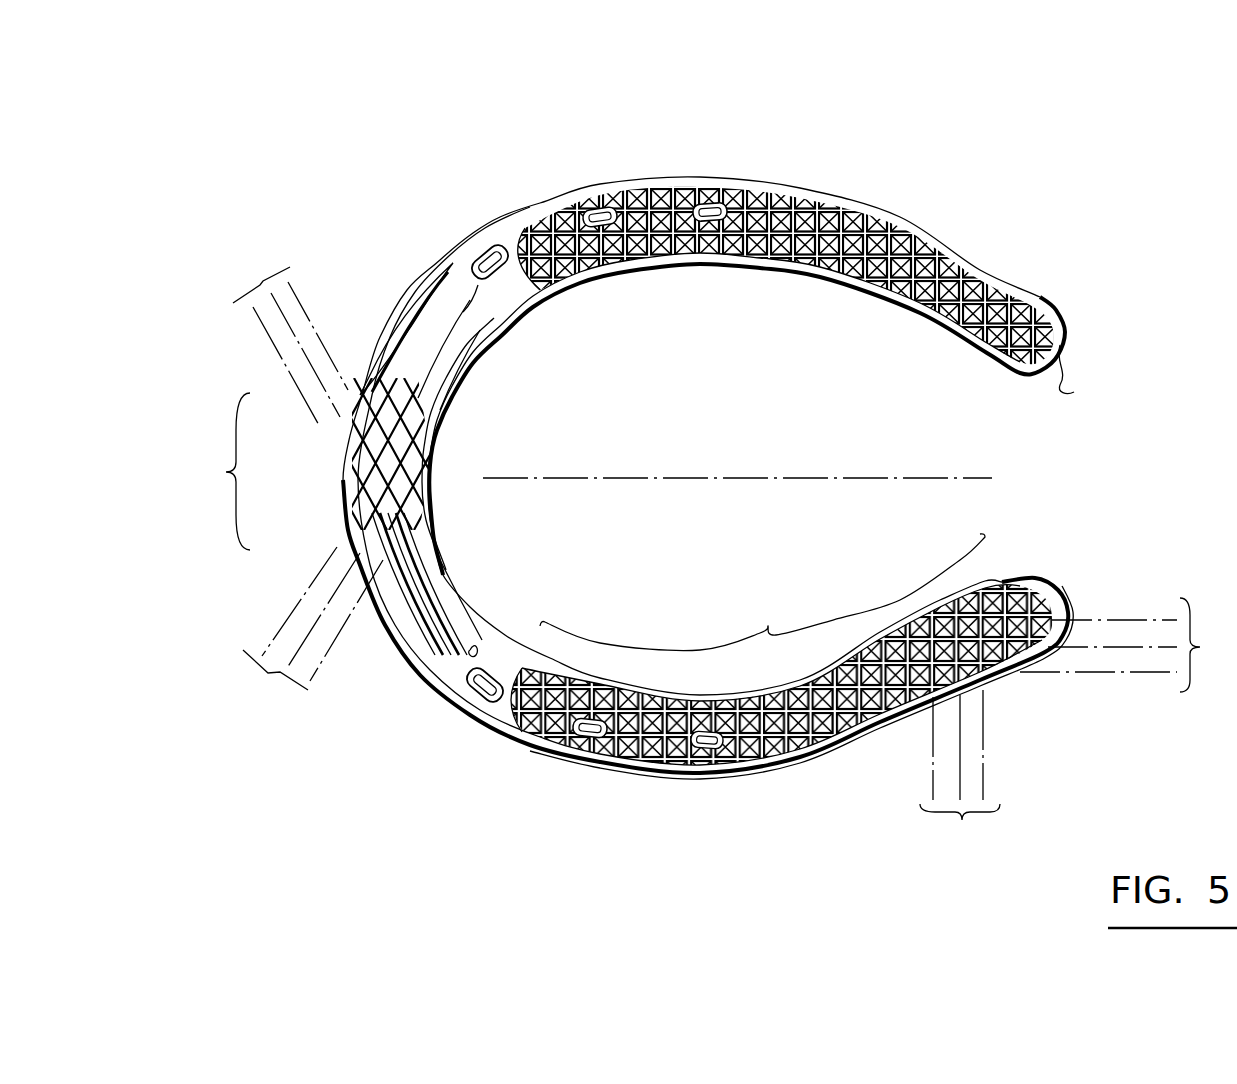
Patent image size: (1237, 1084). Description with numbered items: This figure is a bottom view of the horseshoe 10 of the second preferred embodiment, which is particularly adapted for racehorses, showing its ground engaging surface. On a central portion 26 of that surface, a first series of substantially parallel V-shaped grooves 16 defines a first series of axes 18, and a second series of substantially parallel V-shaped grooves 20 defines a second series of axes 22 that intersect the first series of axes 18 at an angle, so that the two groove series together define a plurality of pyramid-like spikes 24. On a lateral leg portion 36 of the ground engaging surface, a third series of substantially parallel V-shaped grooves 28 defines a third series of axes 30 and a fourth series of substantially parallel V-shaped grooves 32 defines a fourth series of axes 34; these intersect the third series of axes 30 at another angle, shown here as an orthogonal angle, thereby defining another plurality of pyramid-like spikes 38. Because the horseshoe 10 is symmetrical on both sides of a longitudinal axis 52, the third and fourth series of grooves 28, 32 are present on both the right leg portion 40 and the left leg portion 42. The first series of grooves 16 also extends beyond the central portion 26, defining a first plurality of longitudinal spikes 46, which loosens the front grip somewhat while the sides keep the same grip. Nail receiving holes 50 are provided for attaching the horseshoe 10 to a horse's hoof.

The horseshoe 10 is at (328, 182).
The first series of substantially parallel V-shaped grooves 16 is at (293, 432).
The first series of axes 18 is at (356, 336).
The second series of substantially parallel V-shaped grooves 20 is at (297, 530).
The second series of axes 22 is at (313, 632).
The pyramid-like spikes 24 is at (405, 442).
The central portion 26 is at (219, 471).
The third series of substantially parallel V-shaped grooves 28 is at (1040, 640).
The third series of axes 30 is at (1208, 645).
The fourth series of substantially parallel V-shaped grooves 32 is at (978, 684).
The fourth series of axes 34 is at (960, 774).
The lateral leg portion 36 is at (762, 592).
The pyramid-like spikes 38 is at (1010, 592).
The right leg portion 40 is at (1008, 581).
The left leg portion 42 is at (1076, 392).
The first plurality of longitudinal spikes 46 is at (470, 620).
The nail receiving holes 50 is at (490, 248).
The longitudinal axis 52 is at (848, 472).